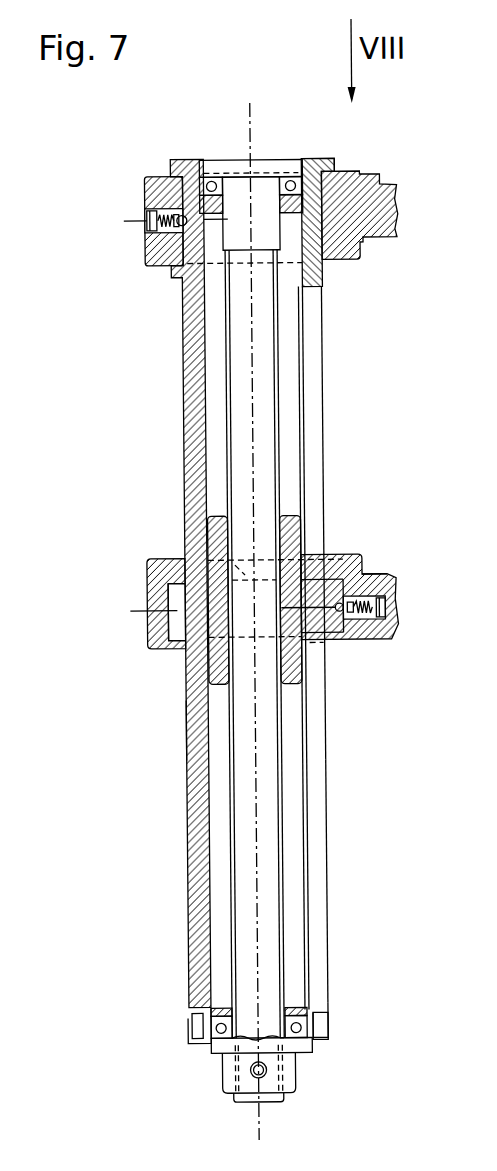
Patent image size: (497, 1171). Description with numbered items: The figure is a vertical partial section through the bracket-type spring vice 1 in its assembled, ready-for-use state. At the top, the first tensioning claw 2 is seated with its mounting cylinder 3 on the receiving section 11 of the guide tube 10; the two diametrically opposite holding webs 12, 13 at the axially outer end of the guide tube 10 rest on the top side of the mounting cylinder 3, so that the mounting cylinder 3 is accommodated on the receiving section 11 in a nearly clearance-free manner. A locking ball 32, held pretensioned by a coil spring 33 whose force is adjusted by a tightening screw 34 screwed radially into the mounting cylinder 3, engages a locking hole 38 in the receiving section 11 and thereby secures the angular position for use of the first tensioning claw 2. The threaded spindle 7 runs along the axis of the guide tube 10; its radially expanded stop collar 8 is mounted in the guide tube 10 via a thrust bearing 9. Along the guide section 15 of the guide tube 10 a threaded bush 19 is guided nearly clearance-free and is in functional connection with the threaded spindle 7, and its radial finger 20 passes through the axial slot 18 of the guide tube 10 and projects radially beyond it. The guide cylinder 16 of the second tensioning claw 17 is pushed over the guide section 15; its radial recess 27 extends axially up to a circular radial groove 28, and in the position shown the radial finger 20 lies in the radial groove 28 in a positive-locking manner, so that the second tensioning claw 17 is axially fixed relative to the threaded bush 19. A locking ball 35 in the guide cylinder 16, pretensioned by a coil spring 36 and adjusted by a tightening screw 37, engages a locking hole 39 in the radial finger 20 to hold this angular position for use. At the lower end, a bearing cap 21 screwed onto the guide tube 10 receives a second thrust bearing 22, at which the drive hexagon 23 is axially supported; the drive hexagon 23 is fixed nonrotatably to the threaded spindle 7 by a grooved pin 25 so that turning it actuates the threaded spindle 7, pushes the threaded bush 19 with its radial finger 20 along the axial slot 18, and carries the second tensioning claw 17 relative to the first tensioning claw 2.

The spring vice 1 is at (164, 434).
The first tensioning claw 2 is at (343, 264).
The mounting cylinder 3 is at (144, 197).
The threaded spindle 7 is at (257, 853).
The stop collar 8 is at (232, 158).
The thrust bearing 9 is at (293, 158).
The guide tube 10 is at (313, 394).
The receiving section 11 is at (321, 221).
The holding web 12 is at (336, 158).
The holding web 13 is at (170, 159).
The guide section 15 is at (189, 762).
The guide cylinder 16 is at (145, 648).
The second tensioning claw 17 is at (367, 724).
The axial slot 18 is at (311, 782).
The threaded bush 19 is at (211, 538).
The radial finger 20 is at (308, 577).
The bearing cap 21 is at (190, 1010).
The second thrust bearing 22 is at (312, 1020).
The drive hexagon 23 is at (221, 1070).
The grooved pin 25 is at (258, 1075).
The radial recess 27 is at (179, 548).
The radial groove 28 is at (173, 620).
The locking ball 32 is at (145, 178).
The coil spring 33 is at (148, 266).
The tightening screw 34 is at (143, 227).
The locking ball 35 is at (376, 573).
The coil spring 36 is at (386, 632).
The tightening screw 37 is at (381, 607).
The locking hole 38 is at (184, 214).
The locking hole 39 is at (313, 597).